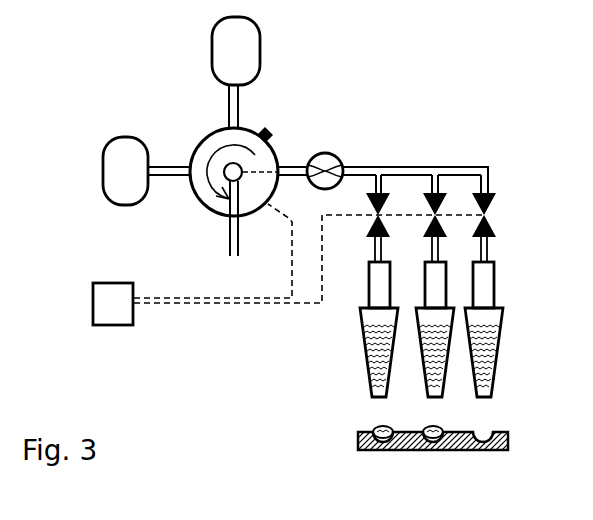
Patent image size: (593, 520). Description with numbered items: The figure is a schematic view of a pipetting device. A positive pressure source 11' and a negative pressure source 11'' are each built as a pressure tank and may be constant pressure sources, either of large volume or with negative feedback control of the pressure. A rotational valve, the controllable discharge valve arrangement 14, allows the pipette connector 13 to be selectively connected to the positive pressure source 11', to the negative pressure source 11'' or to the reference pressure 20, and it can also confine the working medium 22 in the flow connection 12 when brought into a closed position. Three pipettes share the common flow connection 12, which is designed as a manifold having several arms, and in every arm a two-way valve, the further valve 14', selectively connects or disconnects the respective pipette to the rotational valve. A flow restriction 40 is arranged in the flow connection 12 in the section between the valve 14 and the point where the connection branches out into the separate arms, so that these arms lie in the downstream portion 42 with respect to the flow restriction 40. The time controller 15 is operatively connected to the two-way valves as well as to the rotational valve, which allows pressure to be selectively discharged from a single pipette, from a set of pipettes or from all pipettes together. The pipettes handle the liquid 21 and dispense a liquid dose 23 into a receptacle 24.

The positive pressure source 11' is at (272, 72).
The negative pressure source 11'' is at (106, 177).
The controllable discharge valve arrangement 14 is at (224, 152).
The reference pressure 20 is at (246, 282).
The time controller 15 is at (125, 316).
The flow restriction 40 is at (338, 153).
The flow connection 12 is at (457, 167).
The downstream portion 42 is at (505, 171).
The further valve 14' is at (479, 227).
The pipette connector 13 is at (495, 293).
The working medium 22 is at (493, 319).
The liquid 21 is at (495, 372).
The liquid dose 23 is at (358, 436).
The receptacle 24 is at (435, 442).